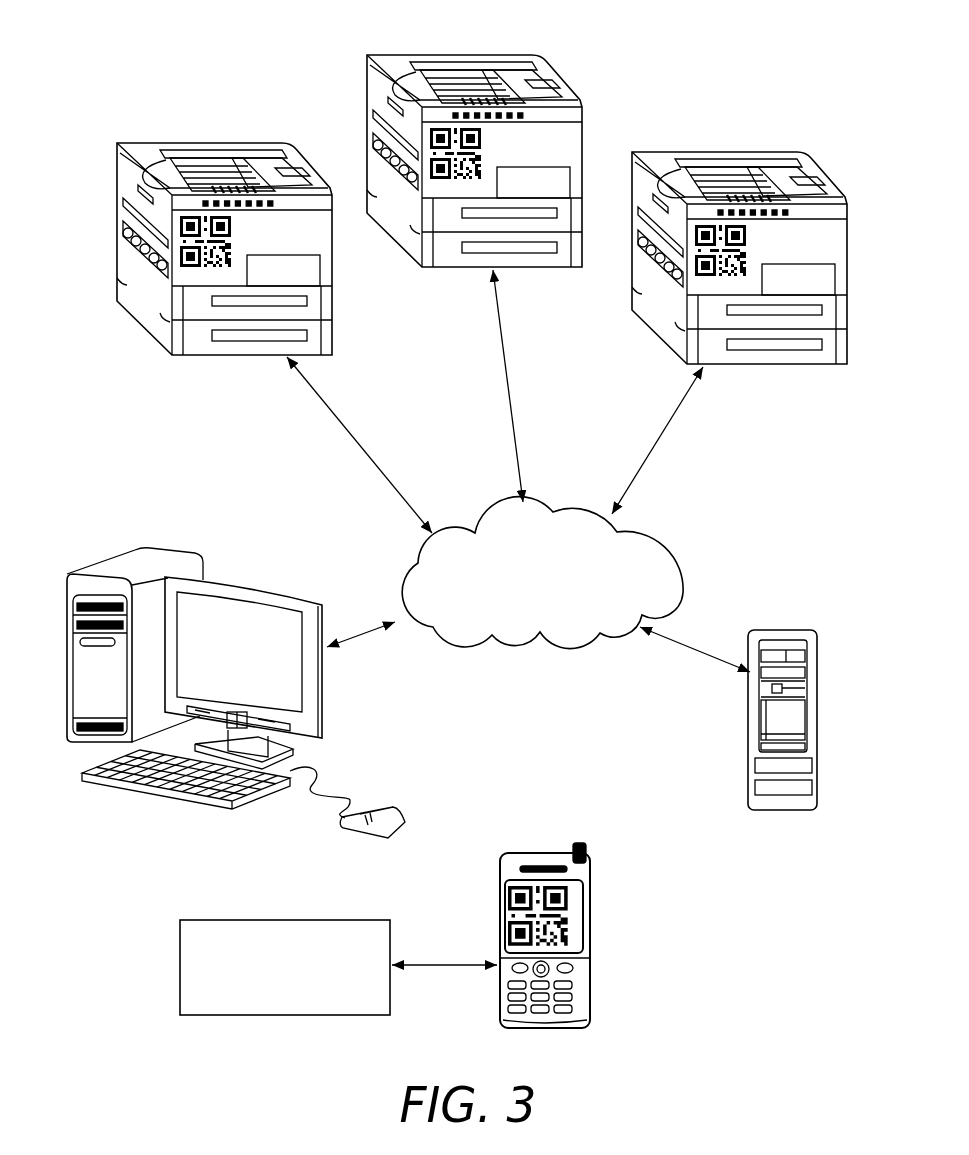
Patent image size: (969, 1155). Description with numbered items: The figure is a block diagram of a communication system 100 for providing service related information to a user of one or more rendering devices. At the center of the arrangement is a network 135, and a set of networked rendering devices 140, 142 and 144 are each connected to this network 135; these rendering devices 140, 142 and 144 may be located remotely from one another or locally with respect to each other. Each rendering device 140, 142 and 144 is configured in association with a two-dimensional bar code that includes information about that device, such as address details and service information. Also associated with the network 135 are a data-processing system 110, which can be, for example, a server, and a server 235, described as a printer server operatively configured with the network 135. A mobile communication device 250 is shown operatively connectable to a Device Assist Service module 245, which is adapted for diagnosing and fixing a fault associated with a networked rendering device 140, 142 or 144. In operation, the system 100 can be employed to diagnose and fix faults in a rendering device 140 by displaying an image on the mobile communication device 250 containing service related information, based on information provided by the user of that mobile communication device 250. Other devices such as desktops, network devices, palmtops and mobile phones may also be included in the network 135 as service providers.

The communication system 100 is at (742, 78).
The data-processing system 110 is at (267, 620).
The network 135 is at (672, 540).
The networked rendering device 140 is at (498, 55).
The networked rendering device 142 is at (257, 140).
The networked rendering device 144 is at (777, 148).
The server 235 is at (790, 630).
The Device Assist Service module 245 is at (293, 918).
The mobile communication device 250 is at (590, 905).